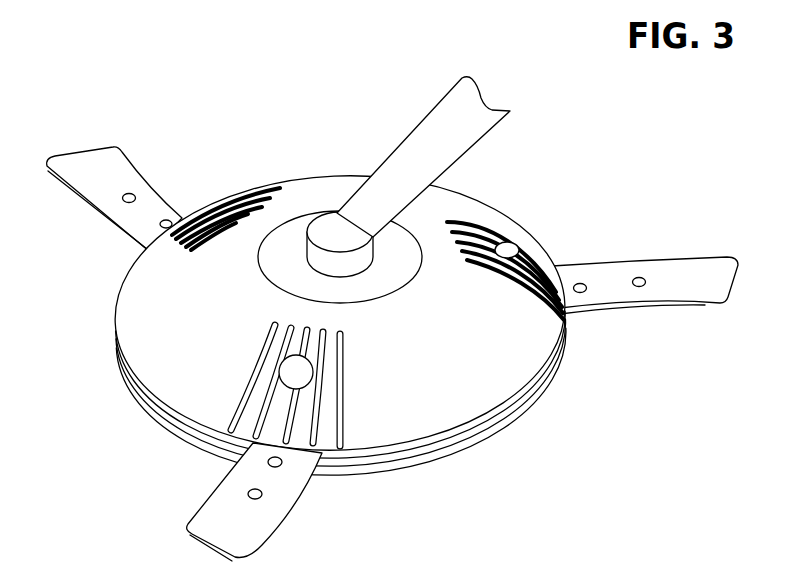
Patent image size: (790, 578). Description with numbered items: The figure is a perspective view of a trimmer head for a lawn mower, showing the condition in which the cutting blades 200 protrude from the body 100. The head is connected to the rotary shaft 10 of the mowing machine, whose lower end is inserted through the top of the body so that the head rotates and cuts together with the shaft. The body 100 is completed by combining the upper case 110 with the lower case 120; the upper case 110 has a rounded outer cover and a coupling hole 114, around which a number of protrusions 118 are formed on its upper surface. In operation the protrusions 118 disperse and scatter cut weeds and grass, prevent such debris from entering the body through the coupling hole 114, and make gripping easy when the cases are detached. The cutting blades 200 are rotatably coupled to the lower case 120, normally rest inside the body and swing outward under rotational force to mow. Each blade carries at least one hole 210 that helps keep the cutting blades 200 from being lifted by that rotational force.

The rotary shaft 10 is at (437, 140).
The body 100 is at (96, 293).
The upper case 110 is at (435, 395).
The coupling hole 114 is at (522, 240).
The protrusion 118 is at (287, 415).
The lower case 120 is at (386, 470).
The cutting blades 200 is at (688, 280).
The hole 210 is at (642, 278).